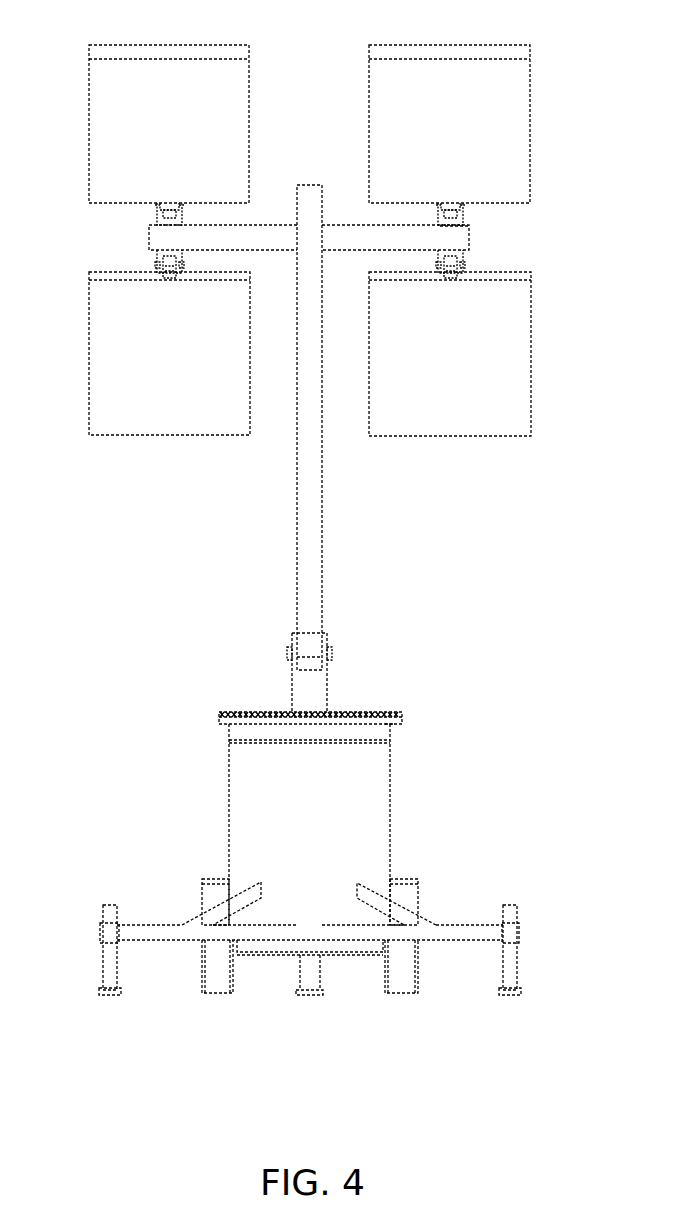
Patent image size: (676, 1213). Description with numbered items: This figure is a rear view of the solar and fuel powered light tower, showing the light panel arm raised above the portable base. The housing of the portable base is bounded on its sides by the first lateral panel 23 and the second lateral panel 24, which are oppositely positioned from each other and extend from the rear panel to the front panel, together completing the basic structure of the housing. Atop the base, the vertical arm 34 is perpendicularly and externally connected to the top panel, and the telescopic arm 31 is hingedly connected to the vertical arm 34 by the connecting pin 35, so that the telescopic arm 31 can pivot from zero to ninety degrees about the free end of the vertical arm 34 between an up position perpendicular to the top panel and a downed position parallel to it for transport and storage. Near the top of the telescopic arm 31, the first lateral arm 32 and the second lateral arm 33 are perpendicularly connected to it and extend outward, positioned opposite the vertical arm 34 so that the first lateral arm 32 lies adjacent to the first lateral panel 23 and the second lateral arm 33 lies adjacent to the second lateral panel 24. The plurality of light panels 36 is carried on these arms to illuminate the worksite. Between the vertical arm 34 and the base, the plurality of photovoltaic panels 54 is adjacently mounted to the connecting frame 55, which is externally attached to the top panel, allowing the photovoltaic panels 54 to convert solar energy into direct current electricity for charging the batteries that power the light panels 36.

The first lateral panel 23 is at (229, 803).
The second lateral panel 24 is at (390, 870).
The telescopic arm 31 is at (317, 563).
The first lateral arm 32 is at (150, 235).
The second lateral arm 33 is at (464, 240).
The vertical arm 34 is at (326, 693).
The connecting pin 35 is at (289, 657).
The light panel 36 is at (93, 151).
The photovoltaic panel 54 is at (219, 718).
The connecting frame 55 is at (390, 730).